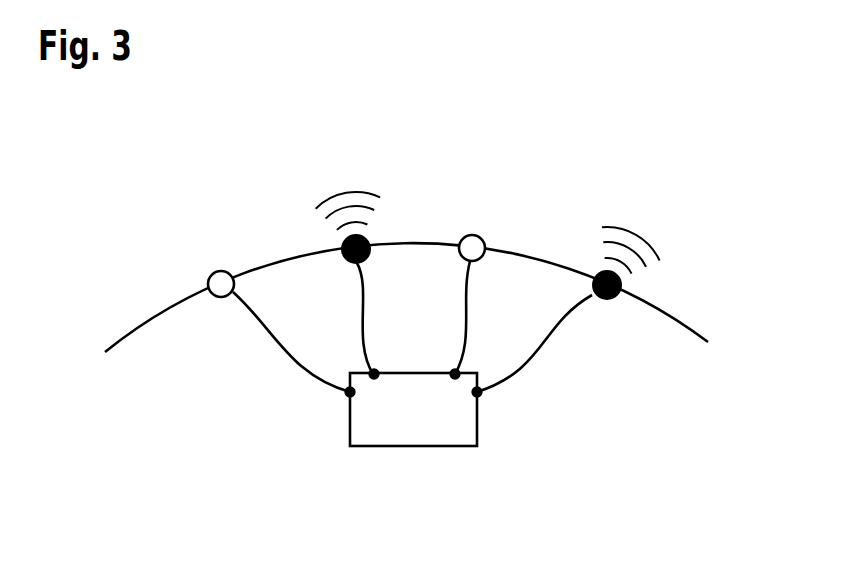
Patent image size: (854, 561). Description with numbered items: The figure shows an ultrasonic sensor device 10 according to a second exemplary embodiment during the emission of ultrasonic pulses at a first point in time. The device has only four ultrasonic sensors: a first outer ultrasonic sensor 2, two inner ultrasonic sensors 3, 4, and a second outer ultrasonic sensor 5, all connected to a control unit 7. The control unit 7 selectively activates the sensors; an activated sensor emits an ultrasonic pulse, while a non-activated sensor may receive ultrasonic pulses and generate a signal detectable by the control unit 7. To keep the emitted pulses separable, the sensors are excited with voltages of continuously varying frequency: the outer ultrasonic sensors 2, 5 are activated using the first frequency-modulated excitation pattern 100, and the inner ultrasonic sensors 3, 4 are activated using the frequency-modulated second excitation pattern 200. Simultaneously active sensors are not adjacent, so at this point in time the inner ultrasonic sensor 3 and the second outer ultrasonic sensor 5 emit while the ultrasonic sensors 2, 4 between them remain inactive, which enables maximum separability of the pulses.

The ultrasonic sensor device 10 is at (116, 170).
The first outer ultrasonic sensor 2 is at (191, 266).
The inner ultrasonic sensor 3 is at (313, 237).
The inner ultrasonic sensor 4 is at (502, 229).
The second outer ultrasonic sensor 5 is at (656, 275).
The control unit 7 is at (414, 447).
The second excitation pattern 200 is at (352, 172).
The first frequency-modulated excitation pattern 100 is at (663, 232).